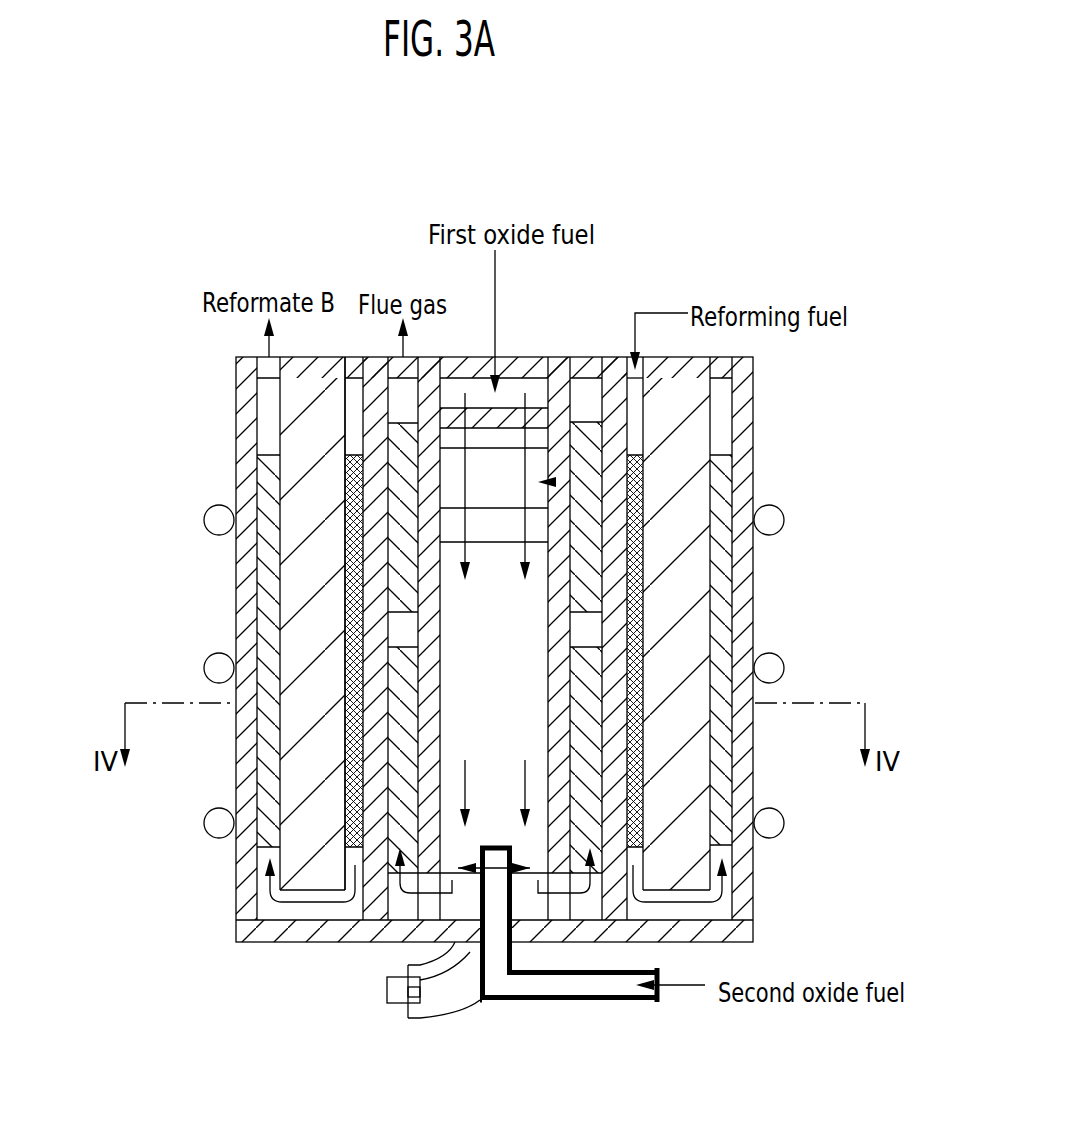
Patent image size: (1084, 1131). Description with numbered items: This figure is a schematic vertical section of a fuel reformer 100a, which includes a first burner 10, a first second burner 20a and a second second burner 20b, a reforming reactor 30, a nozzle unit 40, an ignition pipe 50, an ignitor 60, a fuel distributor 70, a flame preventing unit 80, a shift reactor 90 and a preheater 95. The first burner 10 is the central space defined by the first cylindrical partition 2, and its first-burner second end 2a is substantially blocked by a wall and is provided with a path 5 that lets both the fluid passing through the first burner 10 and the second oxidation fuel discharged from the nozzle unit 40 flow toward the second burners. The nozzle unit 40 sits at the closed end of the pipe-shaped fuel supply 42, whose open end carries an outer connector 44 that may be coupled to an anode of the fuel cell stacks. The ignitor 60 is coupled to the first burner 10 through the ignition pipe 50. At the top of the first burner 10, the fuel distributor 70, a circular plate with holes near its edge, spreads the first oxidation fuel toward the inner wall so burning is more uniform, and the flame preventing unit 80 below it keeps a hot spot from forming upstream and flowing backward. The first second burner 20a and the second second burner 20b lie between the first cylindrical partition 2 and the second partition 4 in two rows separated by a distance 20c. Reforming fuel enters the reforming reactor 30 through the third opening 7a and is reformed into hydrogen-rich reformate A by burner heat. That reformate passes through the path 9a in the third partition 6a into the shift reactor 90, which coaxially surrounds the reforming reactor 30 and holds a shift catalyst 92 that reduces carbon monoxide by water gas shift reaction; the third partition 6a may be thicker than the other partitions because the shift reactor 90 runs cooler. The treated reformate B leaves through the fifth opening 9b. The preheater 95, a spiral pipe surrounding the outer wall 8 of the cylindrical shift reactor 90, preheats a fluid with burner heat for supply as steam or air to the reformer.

The fuel reformer 100a is at (262, 243).
The fifth opening 9b is at (263, 366).
The outer wall 8 is at (246, 410).
The third partition 6a is at (300, 576).
The second partition 4 is at (373, 610).
The first cylindrical partition 2 is at (430, 718).
The preheater 95 is at (204, 822).
The path 9a is at (293, 912).
The path 5 is at (400, 922).
The ignitor 60 is at (397, 1003).
The ignition pipe 50 is at (462, 1008).
The first-burner second end 2a is at (483, 877).
The nozzle unit 40 is at (513, 997).
The fuel supply 42 is at (611, 1002).
The outer connector 44 is at (648, 996).
The fuel distributor 70 is at (545, 410).
The third opening 7a is at (640, 374).
The flame preventing unit 80 is at (556, 482).
The second second burner 20b is at (592, 567).
The first burner 10 is at (523, 597).
The distance 20c is at (582, 635).
The first second burner 20a is at (603, 722).
The reforming reactor 30 is at (635, 753).
The shift reactor 90 is at (712, 787).
The shift catalyst 92 is at (723, 833).